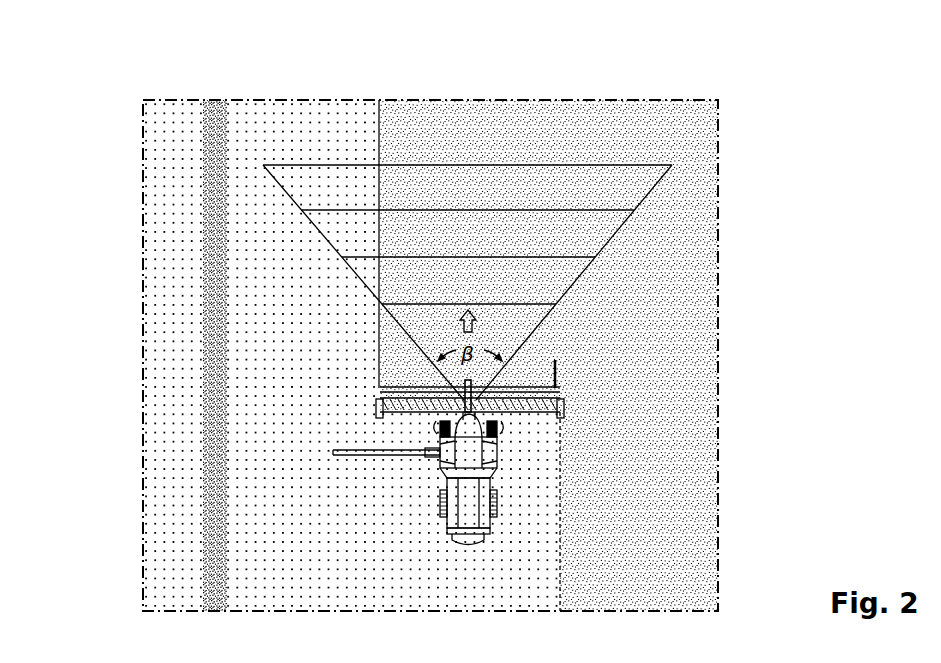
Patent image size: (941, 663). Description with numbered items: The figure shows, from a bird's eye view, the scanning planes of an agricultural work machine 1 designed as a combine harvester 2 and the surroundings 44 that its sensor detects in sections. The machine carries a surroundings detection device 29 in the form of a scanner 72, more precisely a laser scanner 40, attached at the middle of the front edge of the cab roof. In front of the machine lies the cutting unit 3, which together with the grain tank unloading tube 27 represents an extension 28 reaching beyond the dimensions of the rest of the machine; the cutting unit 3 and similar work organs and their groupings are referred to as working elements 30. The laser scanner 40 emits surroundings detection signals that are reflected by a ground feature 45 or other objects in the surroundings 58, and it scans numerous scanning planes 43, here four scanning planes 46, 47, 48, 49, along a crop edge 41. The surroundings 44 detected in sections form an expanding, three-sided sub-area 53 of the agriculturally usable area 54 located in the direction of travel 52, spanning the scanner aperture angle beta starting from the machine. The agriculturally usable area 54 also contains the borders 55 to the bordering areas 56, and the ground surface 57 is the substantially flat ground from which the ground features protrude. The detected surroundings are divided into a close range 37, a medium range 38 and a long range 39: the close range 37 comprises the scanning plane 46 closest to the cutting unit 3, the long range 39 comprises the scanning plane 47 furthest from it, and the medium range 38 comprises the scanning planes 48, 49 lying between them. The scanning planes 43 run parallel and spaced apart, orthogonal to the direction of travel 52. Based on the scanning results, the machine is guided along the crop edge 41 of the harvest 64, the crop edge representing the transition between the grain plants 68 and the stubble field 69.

The agricultural work machine 1 is at (647, 478).
The combine harvester 2 is at (647, 478).
The cutting unit 3 is at (612, 384).
The grain tank unloading tube 27 is at (397, 452).
The extension 28 is at (612, 384).
The surroundings detection device 29 is at (647, 438).
The working elements 30 is at (560, 380).
The close range 37 is at (510, 302).
The medium range 38 is at (615, 208).
The long range 39 is at (640, 165).
The laser scanner 40 is at (647, 438).
The crop edge 41 is at (378, 199).
The scanning planes 43 is at (561, 266).
The surroundings detected in sections 44 is at (549, 228).
The ground feature 45 is at (379, 100).
The scanning plane 46 is at (621, 288).
The scanning plane 47 is at (561, 266).
The scanning plane 48 is at (580, 194).
The scanning plane 49 is at (565, 257).
The direction of travel 52 is at (478, 320).
The sub-area 53 is at (490, 230).
The agriculturally usable area 54 is at (213, 120).
The borders 55 is at (209, 311).
The bordering areas 56 is at (173, 329).
The ground surface 57 is at (175, 122).
The surroundings 58 is at (592, 140).
The harvest 64 is at (607, 311).
The grain plants 68 is at (555, 127).
The stubble field 69 is at (300, 123).
The scanner 72 is at (498, 478).